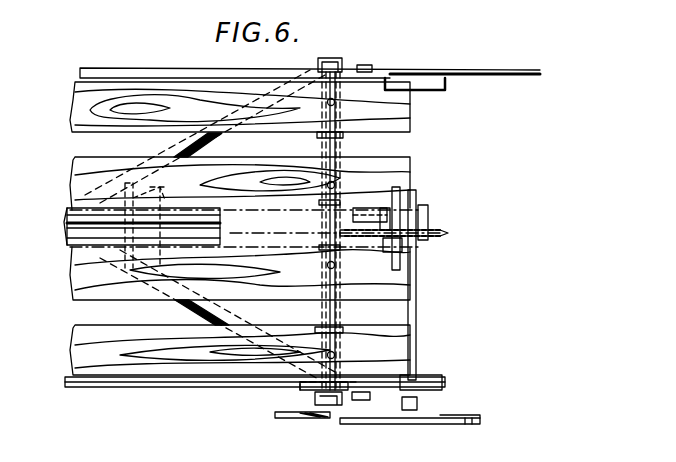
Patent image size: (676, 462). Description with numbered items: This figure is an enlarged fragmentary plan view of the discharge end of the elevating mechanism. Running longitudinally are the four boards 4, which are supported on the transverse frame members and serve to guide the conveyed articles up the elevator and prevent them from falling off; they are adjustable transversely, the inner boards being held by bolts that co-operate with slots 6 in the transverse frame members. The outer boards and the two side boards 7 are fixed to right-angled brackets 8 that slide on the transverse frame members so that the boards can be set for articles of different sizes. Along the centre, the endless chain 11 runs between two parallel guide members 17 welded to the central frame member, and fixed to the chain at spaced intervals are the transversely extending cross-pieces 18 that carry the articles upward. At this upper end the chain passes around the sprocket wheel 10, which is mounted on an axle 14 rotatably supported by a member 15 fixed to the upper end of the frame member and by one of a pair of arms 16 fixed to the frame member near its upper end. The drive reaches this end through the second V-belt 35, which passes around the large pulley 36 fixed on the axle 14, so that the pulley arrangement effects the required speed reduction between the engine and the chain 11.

The boards 4 is at (395, 126).
The slots 6 is at (336, 320).
The side boards 7 is at (194, 76).
The right-angled brackets 8 is at (340, 137).
The sprocket wheel 10 is at (424, 237).
The endless chain 11 is at (428, 235).
The axle 14 is at (416, 325).
The member 15 is at (401, 212).
The arms 16 is at (214, 147).
The guide members 17 is at (67, 230).
The cross-pieces 18 is at (396, 194).
The second V-belt 35 is at (322, 419).
The large pulley 36 is at (405, 421).